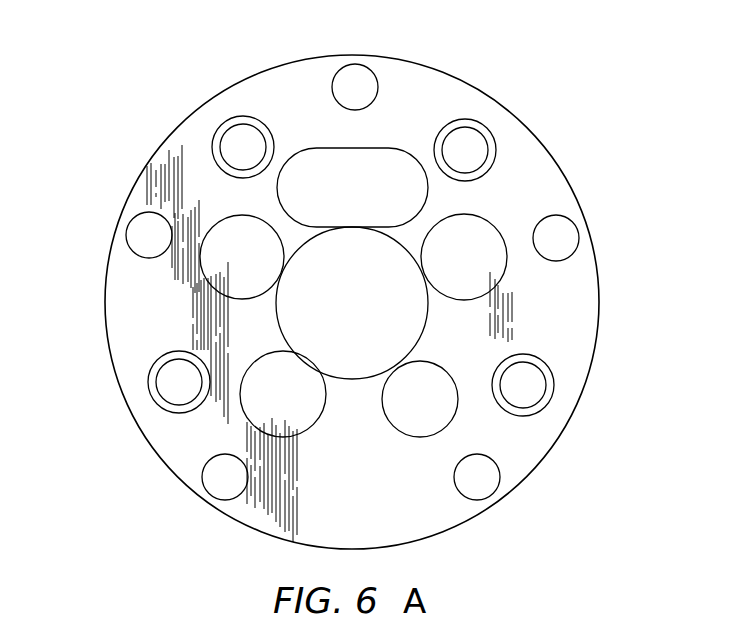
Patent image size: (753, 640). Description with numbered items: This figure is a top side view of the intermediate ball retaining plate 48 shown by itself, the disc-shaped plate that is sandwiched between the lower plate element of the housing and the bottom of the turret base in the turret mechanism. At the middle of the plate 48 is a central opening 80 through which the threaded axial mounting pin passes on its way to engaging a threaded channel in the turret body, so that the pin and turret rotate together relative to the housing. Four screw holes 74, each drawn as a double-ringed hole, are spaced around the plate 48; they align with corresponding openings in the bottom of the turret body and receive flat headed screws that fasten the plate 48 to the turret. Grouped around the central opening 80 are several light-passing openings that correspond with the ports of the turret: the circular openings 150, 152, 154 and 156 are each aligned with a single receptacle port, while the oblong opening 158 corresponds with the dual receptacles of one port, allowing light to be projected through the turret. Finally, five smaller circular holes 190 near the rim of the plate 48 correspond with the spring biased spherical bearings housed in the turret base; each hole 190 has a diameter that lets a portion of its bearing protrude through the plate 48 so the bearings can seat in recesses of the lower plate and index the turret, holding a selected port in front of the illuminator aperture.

The intermediate ball retaining plate 48 is at (128, 205).
The screw holes 74 is at (222, 124).
The central opening 80 is at (428, 318).
The circular opening 150 is at (417, 437).
The circular opening 152 is at (285, 437).
The circular opening 154 is at (470, 215).
The circular opening 156 is at (232, 216).
The oblong opening 158 is at (358, 148).
The circular holes 190 is at (372, 74).